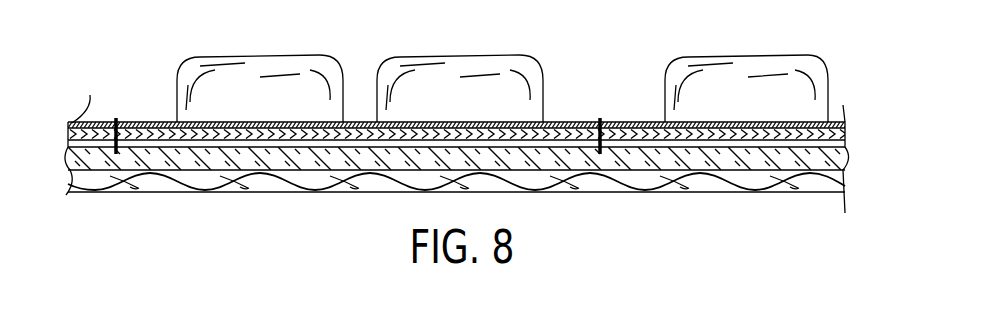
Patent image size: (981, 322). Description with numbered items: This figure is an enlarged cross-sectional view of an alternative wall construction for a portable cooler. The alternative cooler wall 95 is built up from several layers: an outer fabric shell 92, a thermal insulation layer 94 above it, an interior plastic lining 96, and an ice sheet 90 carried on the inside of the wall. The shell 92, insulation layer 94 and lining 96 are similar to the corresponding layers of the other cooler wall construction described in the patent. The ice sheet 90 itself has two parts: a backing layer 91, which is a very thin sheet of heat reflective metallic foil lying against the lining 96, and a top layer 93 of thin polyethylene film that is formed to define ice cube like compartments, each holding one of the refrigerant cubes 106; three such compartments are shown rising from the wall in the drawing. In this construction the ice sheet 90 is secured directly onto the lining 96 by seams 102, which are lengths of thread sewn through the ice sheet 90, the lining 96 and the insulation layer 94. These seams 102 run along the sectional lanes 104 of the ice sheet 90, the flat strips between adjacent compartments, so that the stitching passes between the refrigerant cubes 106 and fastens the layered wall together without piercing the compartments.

The ice sheet 90 is at (345, 122).
The backing layer 91 is at (68, 126).
The fabric shell 92 is at (163, 183).
The top layer 93 is at (690, 57).
The thermal insulation layer 94 is at (222, 157).
The alternative cooler wall 95 is at (594, 232).
The interior plastic lining 96 is at (847, 145).
The seams 102 is at (114, 122).
The sectional lanes 104 is at (100, 76).
The refrigerant cubes 106 is at (488, 61).